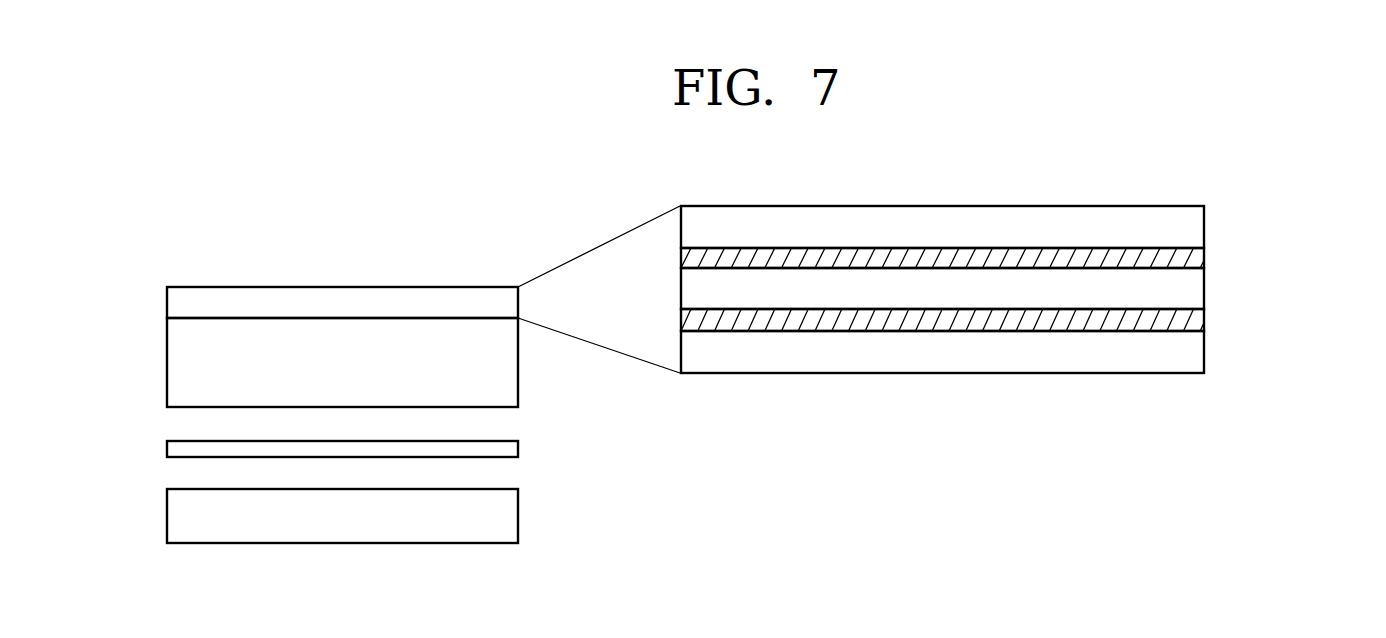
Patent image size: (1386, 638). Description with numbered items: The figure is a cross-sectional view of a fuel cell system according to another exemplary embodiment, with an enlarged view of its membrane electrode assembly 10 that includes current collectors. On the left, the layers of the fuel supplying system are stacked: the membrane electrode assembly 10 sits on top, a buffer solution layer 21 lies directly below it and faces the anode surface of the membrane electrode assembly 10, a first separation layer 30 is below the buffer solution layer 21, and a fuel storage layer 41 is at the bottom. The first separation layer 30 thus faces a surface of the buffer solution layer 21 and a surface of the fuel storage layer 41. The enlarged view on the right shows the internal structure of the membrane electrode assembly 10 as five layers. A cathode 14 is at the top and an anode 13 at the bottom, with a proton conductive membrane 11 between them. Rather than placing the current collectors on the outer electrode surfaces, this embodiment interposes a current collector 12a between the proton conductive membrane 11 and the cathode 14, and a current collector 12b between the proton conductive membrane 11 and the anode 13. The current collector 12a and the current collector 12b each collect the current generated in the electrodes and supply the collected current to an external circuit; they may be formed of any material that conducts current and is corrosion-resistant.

The membrane electrode assembly 10 is at (180, 301).
The proton conductive membrane 11 is at (1182, 289).
The current collector 12a is at (1182, 259).
The current collector 12b is at (1182, 319).
The anode 13 is at (1182, 352).
The cathode 14 is at (1182, 225).
The buffer solution layer 21 is at (180, 364).
The first separation layer 30 is at (180, 450).
The fuel storage layer 41 is at (180, 513).